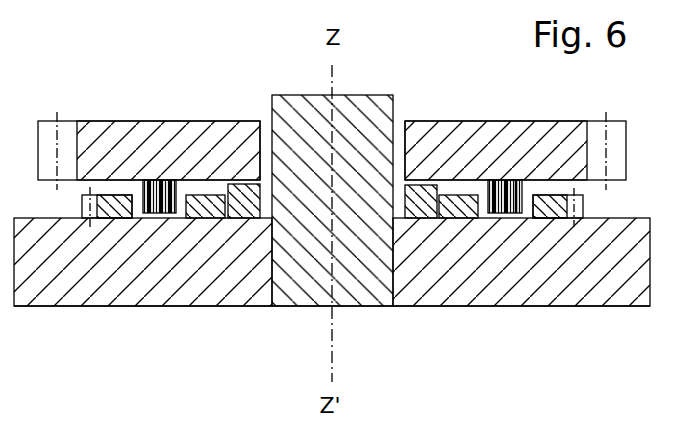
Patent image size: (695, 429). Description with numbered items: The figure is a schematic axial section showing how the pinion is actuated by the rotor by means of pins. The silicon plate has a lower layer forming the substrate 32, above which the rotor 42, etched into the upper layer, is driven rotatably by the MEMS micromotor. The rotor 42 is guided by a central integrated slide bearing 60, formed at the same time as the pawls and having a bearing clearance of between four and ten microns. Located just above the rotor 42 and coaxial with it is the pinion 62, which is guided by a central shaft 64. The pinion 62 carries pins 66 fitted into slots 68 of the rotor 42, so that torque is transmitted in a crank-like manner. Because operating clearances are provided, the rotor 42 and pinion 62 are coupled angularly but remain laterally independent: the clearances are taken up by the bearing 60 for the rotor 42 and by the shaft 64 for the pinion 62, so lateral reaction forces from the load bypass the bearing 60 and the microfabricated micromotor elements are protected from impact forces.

The substrate 32 is at (63, 295).
The rotor 42 is at (118, 203).
The slide bearing 60 is at (423, 205).
The pinion 62 is at (217, 137).
The central shaft 64 is at (360, 282).
The pins 66 is at (153, 198).
The slots 68 is at (182, 208).